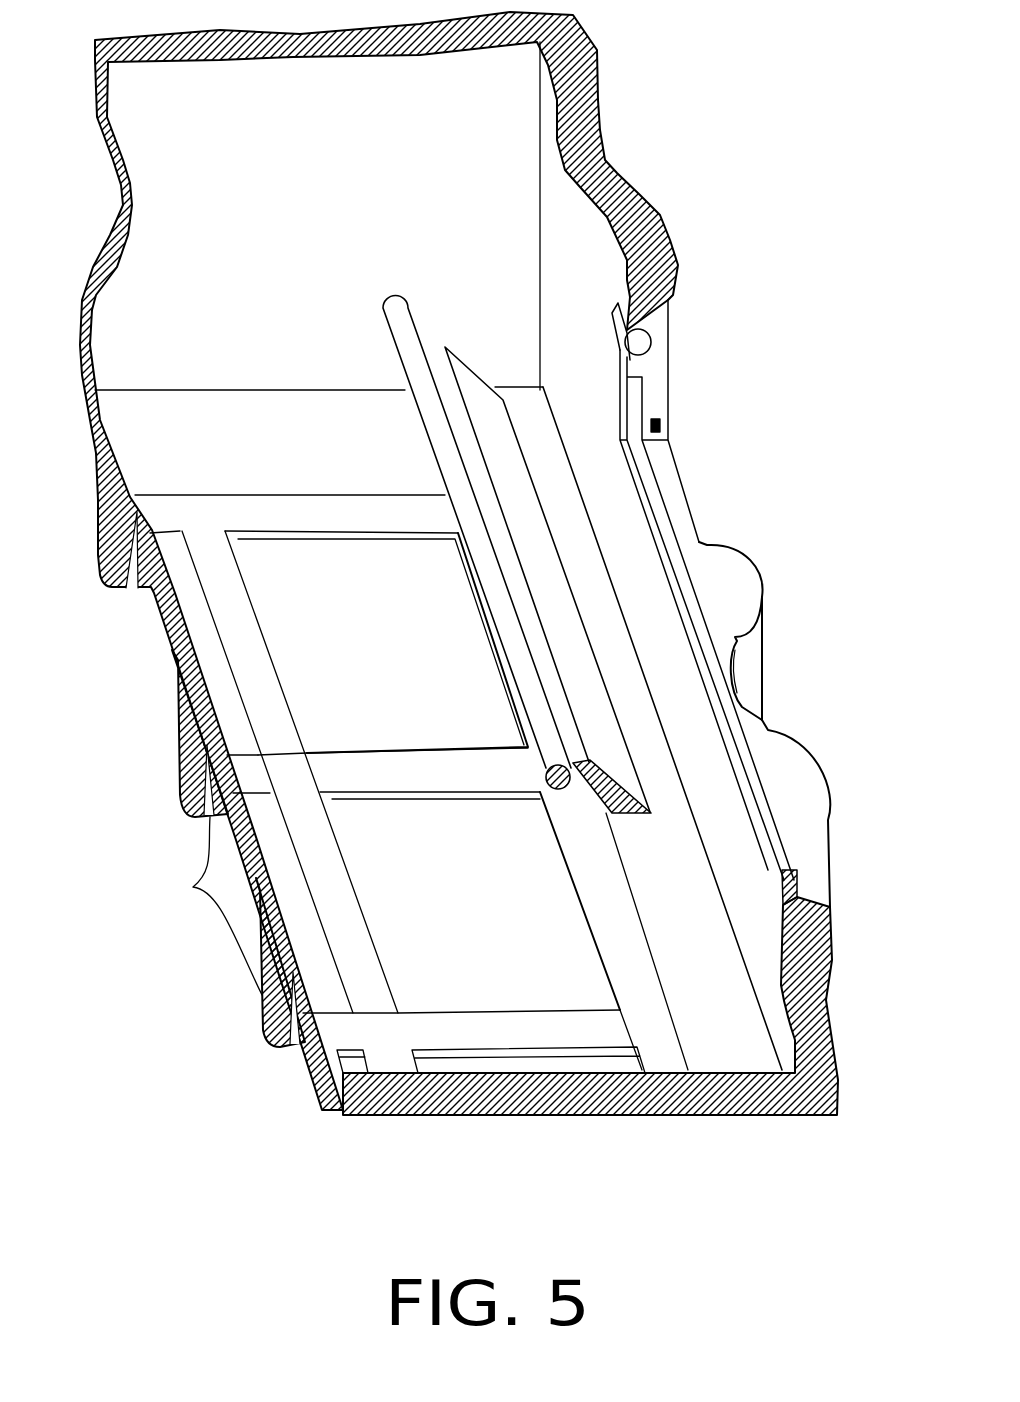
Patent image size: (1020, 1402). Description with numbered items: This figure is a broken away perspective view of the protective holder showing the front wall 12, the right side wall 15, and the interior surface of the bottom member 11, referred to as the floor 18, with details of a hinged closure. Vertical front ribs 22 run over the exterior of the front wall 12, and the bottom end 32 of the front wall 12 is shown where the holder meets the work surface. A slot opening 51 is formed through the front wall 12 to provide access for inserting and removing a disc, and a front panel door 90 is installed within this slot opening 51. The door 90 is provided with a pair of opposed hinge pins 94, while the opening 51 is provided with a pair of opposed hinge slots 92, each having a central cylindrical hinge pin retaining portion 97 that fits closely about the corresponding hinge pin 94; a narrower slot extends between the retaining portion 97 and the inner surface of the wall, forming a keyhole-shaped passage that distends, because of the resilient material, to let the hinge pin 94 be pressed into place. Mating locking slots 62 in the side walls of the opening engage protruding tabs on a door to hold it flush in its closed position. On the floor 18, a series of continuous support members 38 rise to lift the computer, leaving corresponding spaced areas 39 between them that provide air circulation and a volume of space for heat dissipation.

The bottom member 11 is at (160, 616).
The front wall 12 is at (737, 813).
The right side wall 15 is at (345, 202).
The floor 18 is at (378, 612).
The front ribs 22 is at (767, 600).
The bottom end of front wall 32 is at (196, 887).
The continuous support members 38 is at (318, 752).
The spaced areas 39 is at (425, 992).
The slot opening 51 is at (592, 563).
The locking slots 62 is at (661, 426).
The front panel door 90 is at (563, 632).
The hinge slots 92 is at (621, 336).
The hinge pins 94 is at (396, 342).
The hinge pin retaining portion 97 is at (652, 342).